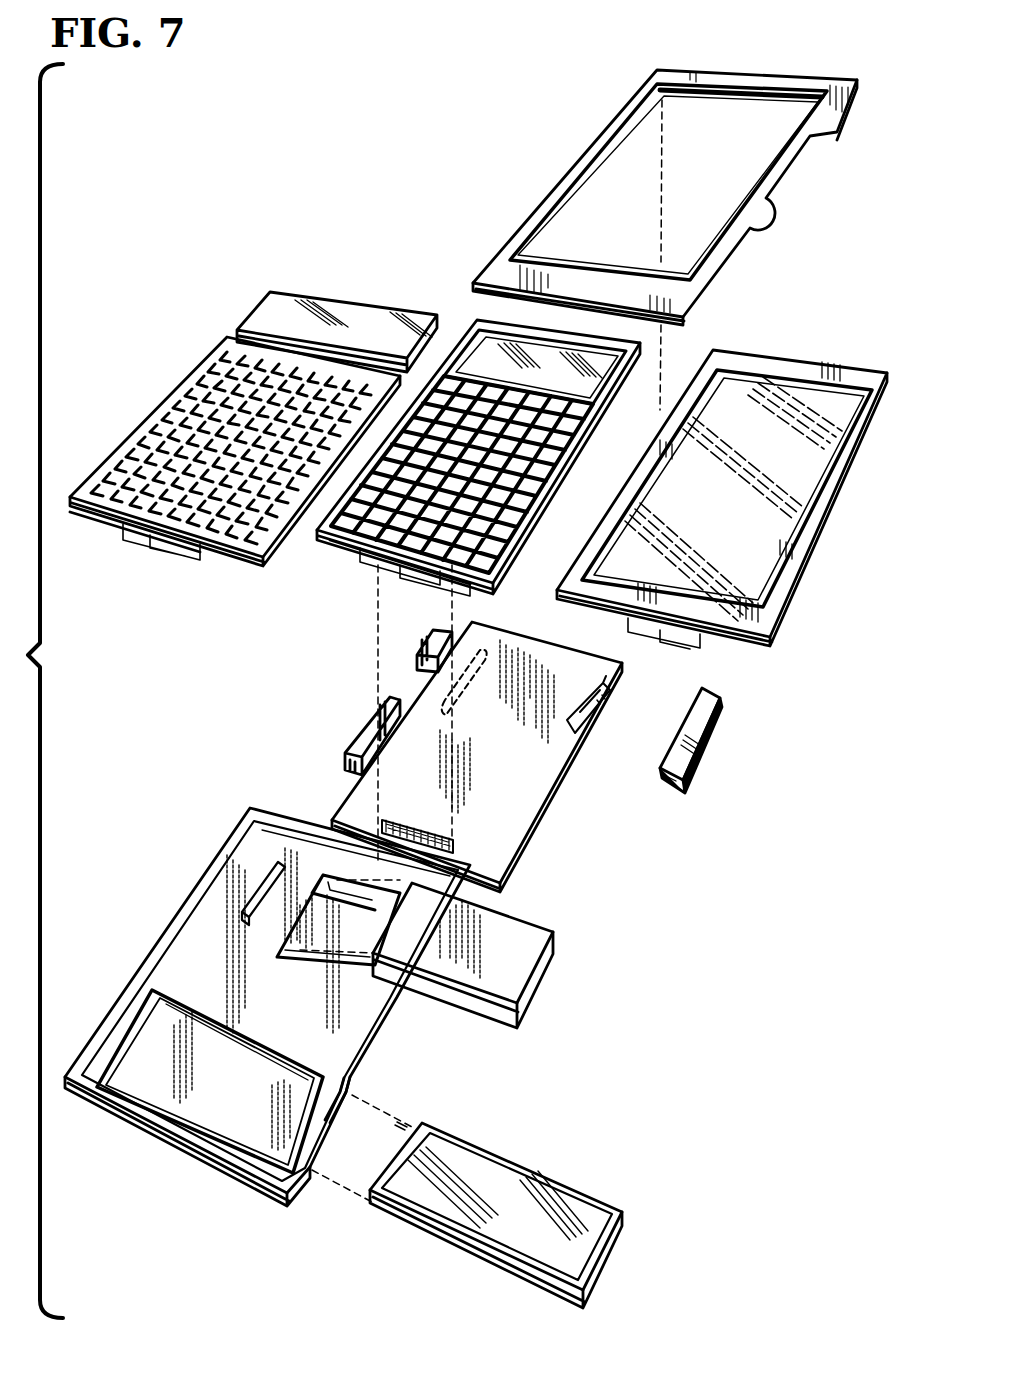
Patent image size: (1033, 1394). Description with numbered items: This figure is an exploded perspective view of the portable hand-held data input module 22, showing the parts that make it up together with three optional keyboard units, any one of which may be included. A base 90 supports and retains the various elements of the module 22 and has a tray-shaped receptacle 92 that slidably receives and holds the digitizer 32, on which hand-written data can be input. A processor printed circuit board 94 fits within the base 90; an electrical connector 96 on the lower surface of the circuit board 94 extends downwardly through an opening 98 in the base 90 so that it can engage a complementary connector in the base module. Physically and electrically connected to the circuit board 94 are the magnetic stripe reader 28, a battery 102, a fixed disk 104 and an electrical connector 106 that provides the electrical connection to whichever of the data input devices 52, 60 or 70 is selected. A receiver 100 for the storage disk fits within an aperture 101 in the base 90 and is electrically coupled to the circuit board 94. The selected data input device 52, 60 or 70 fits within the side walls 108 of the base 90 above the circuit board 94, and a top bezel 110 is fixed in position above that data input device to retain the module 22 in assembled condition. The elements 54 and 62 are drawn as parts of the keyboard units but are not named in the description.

The portable hand-held data input module 22 is at (420, 250).
The magnetic stripe reader 28 is at (707, 745).
The digitizer 32 is at (440, 1245).
The data input device 52 is at (186, 377).
The display module 54 is at (262, 318).
The data input device 60 is at (469, 452).
The display window 62 is at (522, 343).
The data input device 70 is at (790, 598).
The base 90 is at (267, 991).
The tray-shaped receptacle 92 is at (320, 1118).
The processor printed circuit board 94 is at (482, 728).
The electrical connector 96 is at (477, 633).
The opening 98 is at (260, 873).
The receiver 100 is at (553, 932).
The aperture 101 is at (307, 963).
The battery 102 is at (428, 632).
The fixed disk 104 is at (362, 727).
The electrical connector 106 is at (453, 848).
The side walls 108 is at (170, 923).
The top bezel 110 is at (820, 128).